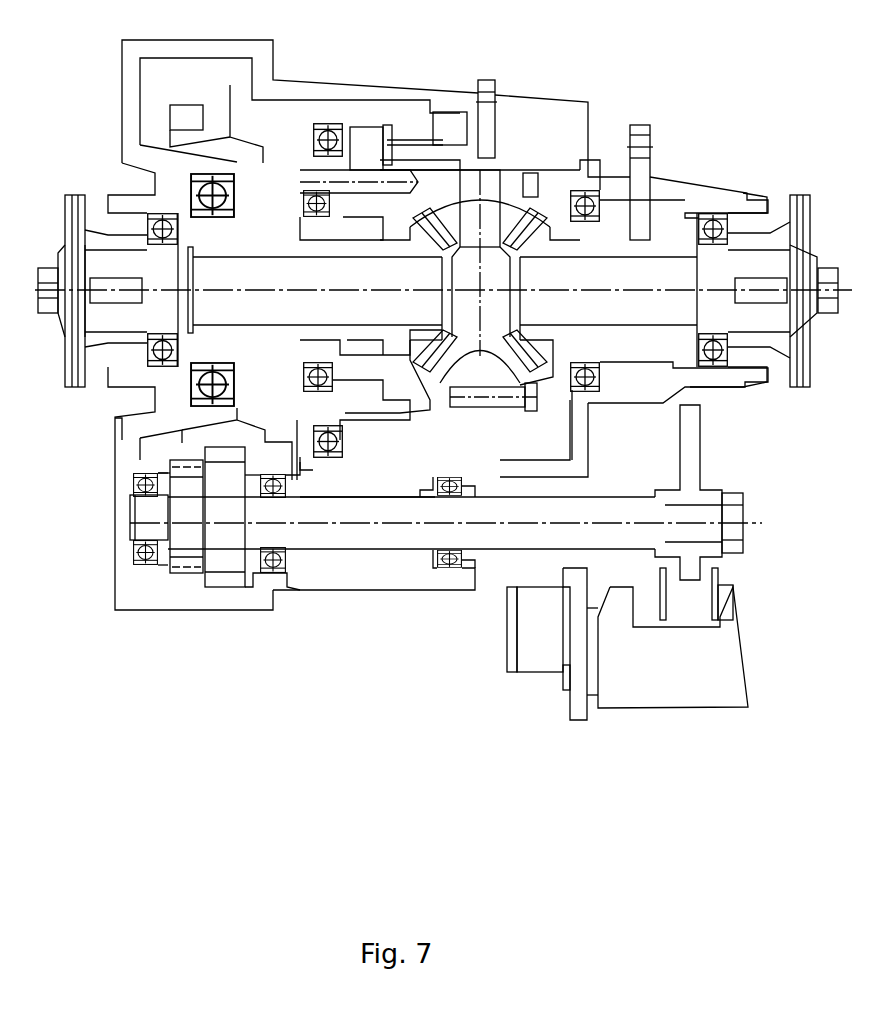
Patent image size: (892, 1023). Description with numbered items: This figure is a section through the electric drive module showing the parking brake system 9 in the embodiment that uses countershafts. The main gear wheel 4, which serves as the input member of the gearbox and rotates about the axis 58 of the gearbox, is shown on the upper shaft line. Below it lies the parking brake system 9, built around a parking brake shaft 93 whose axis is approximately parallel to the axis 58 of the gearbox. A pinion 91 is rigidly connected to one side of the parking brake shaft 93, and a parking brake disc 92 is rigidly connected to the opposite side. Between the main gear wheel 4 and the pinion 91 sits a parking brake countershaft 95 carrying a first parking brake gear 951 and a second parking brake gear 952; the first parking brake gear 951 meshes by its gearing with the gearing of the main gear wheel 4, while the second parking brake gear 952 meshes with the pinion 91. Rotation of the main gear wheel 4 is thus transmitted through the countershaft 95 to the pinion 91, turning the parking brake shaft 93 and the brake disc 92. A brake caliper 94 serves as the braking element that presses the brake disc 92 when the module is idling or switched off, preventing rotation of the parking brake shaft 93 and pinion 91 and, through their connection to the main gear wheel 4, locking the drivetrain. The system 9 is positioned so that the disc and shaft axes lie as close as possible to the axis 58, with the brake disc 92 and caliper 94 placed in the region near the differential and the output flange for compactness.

The axis of the gearbox 58 is at (237, 290).
The main gear wheel 4 is at (198, 445).
The parking brake countershaft 95 is at (148, 507).
The second parking brake gear 952 is at (228, 460).
The first parking brake gear 951 is at (183, 558).
The pinion 91 is at (227, 558).
The parking brake system 9 is at (347, 557).
The parking brake shaft 93 is at (400, 535).
The brake caliper 94 is at (543, 637).
The parking brake disc 92 is at (688, 572).